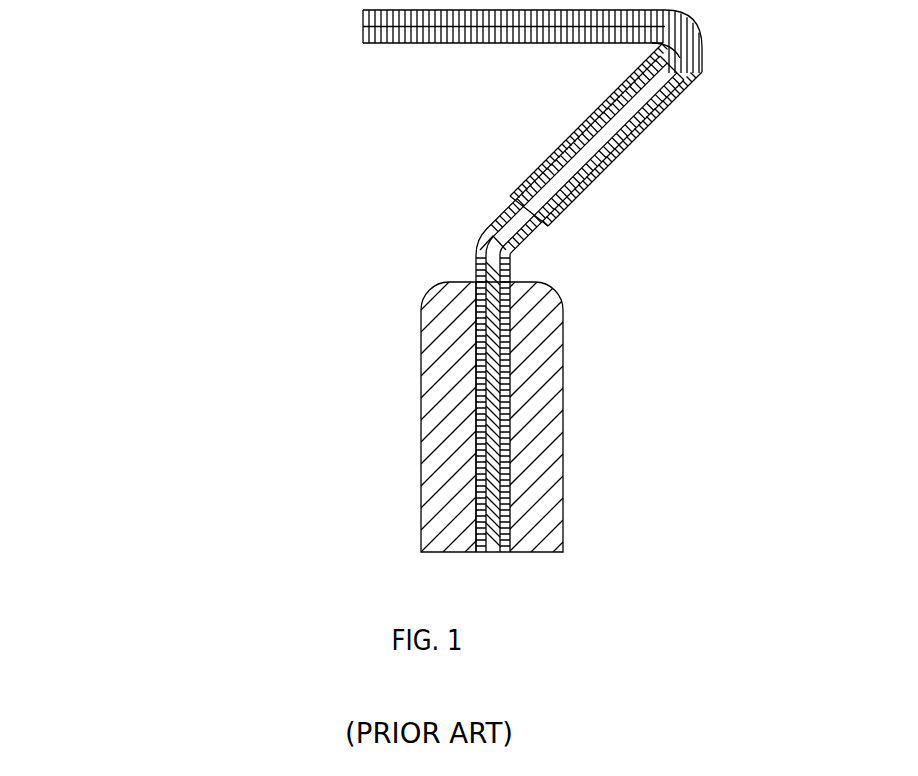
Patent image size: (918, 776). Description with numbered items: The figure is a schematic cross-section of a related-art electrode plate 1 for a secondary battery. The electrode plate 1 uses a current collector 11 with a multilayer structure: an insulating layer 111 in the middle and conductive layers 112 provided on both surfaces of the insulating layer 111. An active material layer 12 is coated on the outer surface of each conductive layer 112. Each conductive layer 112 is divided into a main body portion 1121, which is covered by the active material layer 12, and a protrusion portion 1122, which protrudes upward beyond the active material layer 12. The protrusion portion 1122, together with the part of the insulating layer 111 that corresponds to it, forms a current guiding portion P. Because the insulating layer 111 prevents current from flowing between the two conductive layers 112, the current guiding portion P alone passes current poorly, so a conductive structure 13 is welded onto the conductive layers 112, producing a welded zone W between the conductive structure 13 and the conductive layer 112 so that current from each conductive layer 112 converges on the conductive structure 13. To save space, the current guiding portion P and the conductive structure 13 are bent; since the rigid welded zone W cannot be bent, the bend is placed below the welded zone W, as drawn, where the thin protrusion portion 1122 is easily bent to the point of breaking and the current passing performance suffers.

The electrode plate 1 is at (143, 128).
The current collector 11 is at (227, 262).
The insulating layer 111 is at (482, 387).
The conductive layer 112 is at (300, 228).
The main body portion 1121 is at (482, 322).
The protrusion portion 1122 is at (488, 252).
The active material layer 12 is at (563, 432).
The conductive structure 13 is at (448, 43).
The welded zone W is at (573, 130).
The current guiding portion P is at (537, 242).